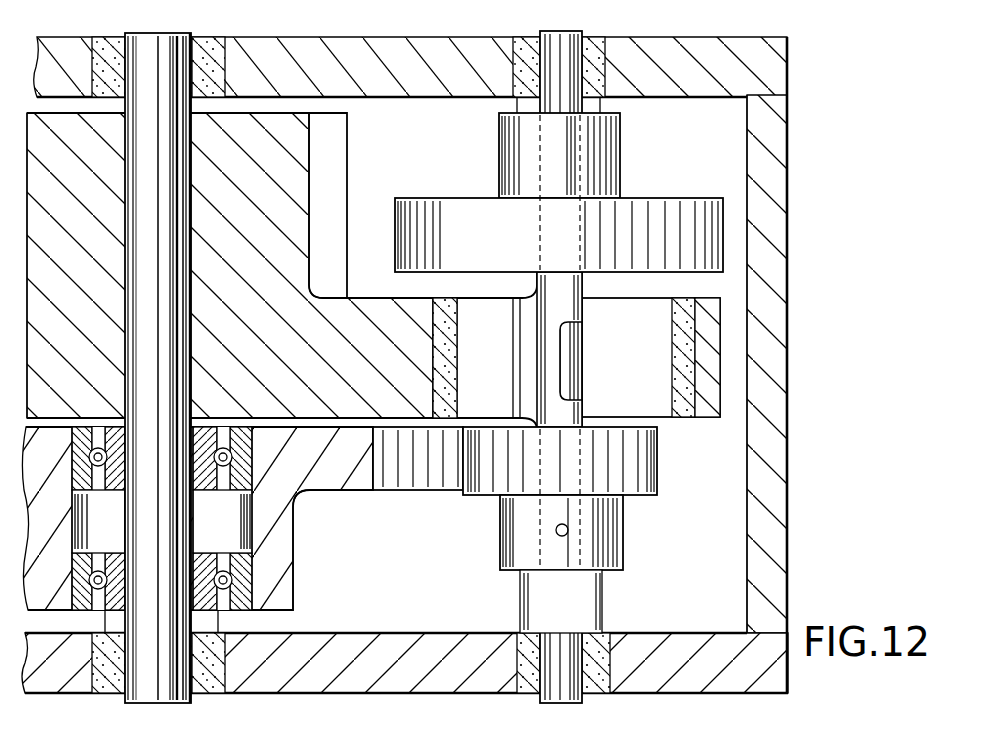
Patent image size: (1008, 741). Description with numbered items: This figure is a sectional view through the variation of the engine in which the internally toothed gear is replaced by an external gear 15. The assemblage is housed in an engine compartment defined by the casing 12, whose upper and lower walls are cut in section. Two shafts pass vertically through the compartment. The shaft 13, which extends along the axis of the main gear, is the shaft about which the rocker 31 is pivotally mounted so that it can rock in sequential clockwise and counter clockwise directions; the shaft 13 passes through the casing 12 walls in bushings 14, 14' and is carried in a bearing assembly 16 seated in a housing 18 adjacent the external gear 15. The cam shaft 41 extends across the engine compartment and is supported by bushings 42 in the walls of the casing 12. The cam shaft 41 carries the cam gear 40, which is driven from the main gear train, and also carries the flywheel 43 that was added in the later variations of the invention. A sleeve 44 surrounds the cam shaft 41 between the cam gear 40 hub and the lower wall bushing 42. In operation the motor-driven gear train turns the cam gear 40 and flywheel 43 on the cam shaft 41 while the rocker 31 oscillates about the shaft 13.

The casing 12 is at (787, 68).
The shaft 13 is at (165, 36).
The bearing bushing 14 is at (221, 354).
The bearing bushing 14' is at (100, 48).
The external gear 15 is at (280, 592).
The ball bearing assembly 16 is at (250, 490).
The support member 18 is at (722, 300).
The rocker 31 is at (710, 345).
The cam gear 40 is at (657, 468).
The cam shaft 41 is at (578, 28).
The bushings 42 is at (606, 40).
The flywheel 43 is at (723, 228).
The sleeve 44 is at (598, 608).